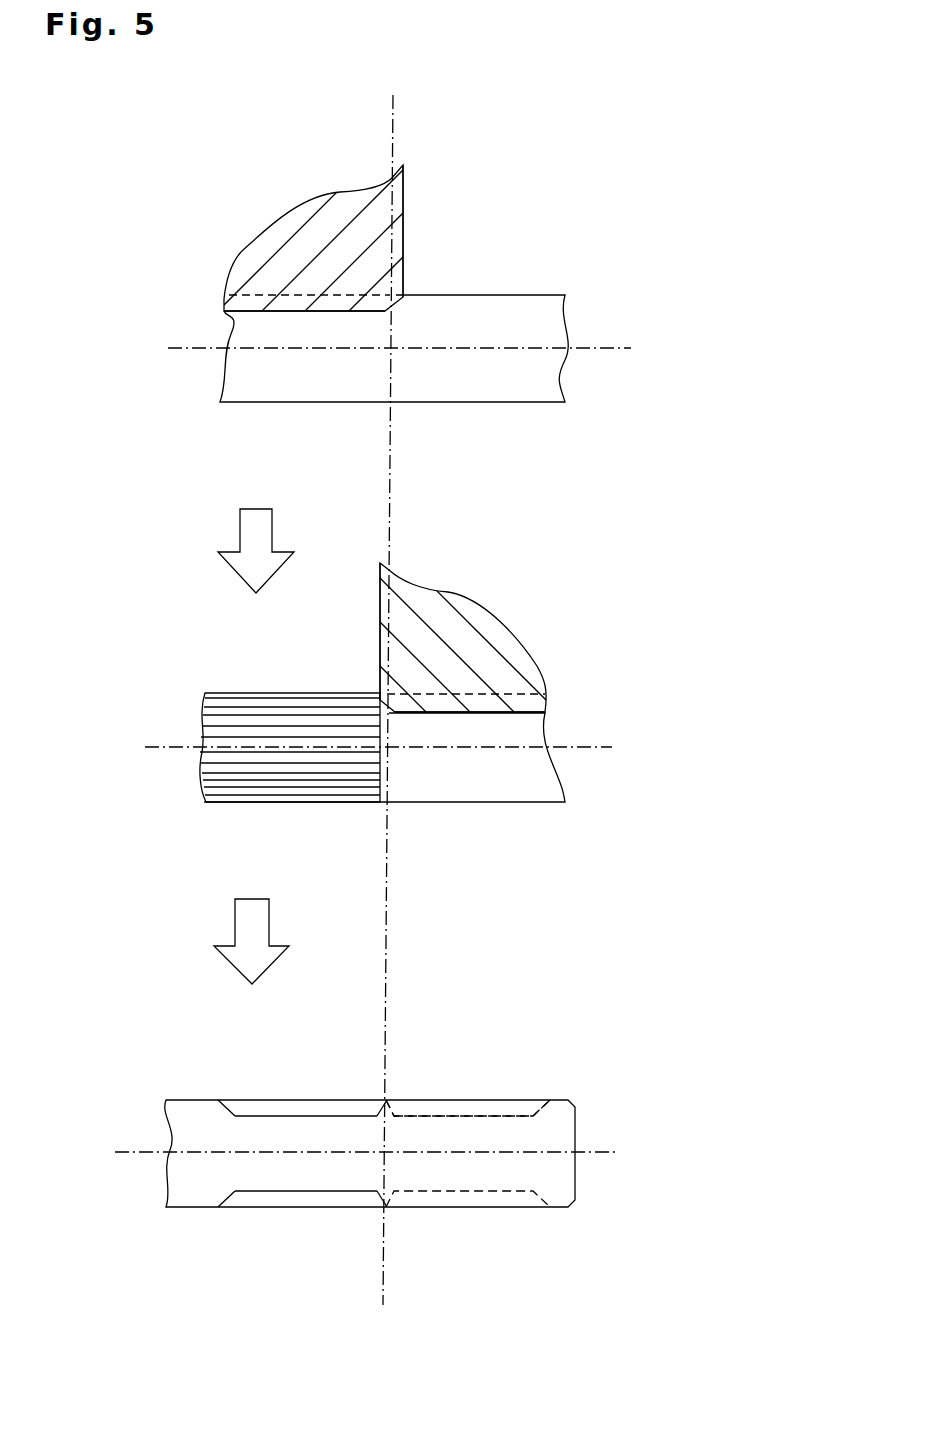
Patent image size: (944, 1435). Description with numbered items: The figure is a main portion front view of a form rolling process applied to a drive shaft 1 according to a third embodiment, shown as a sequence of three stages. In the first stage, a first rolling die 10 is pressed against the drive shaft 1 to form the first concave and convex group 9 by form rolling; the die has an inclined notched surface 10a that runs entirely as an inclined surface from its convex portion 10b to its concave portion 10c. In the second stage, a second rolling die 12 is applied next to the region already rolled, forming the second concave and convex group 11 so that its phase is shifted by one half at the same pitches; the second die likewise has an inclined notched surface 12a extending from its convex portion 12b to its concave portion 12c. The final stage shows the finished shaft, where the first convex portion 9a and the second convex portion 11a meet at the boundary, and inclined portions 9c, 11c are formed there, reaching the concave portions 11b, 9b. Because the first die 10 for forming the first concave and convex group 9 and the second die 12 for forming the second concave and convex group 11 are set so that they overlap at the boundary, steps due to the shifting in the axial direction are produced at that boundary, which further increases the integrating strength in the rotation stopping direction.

The drive shaft 1 is at (500, 369).
The first concave and convex group 9 is at (252, 718).
The first convex portion 9a is at (291, 1098).
The concave portion 9b is at (256, 1115).
The inclined portion 9c is at (386, 1100).
The first rolling die 10 is at (318, 221).
The inclined notched surface 10a is at (403, 293).
The convex portion 10b is at (290, 311).
The concave portion 10c is at (250, 294).
The second concave and convex group 11 is at (559, 1087).
The second convex portion 11a is at (523, 1100).
The concave portion 11b is at (464, 1102).
The inclined portion 11c is at (383, 1108).
The second rolling die 12 is at (443, 649).
The inclined notched surface 12a is at (380, 690).
The convex portion 12b is at (463, 713).
The concave portion 12c is at (480, 677).